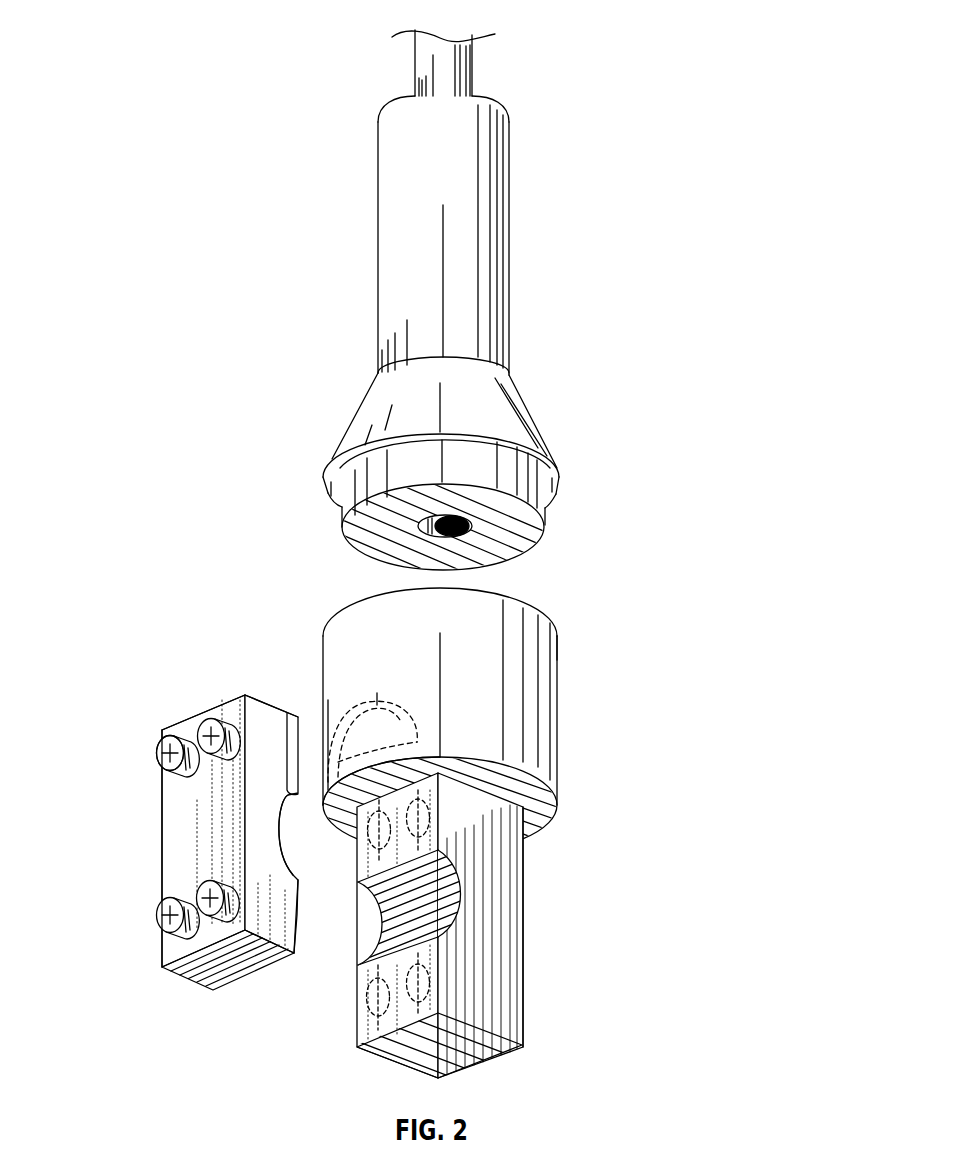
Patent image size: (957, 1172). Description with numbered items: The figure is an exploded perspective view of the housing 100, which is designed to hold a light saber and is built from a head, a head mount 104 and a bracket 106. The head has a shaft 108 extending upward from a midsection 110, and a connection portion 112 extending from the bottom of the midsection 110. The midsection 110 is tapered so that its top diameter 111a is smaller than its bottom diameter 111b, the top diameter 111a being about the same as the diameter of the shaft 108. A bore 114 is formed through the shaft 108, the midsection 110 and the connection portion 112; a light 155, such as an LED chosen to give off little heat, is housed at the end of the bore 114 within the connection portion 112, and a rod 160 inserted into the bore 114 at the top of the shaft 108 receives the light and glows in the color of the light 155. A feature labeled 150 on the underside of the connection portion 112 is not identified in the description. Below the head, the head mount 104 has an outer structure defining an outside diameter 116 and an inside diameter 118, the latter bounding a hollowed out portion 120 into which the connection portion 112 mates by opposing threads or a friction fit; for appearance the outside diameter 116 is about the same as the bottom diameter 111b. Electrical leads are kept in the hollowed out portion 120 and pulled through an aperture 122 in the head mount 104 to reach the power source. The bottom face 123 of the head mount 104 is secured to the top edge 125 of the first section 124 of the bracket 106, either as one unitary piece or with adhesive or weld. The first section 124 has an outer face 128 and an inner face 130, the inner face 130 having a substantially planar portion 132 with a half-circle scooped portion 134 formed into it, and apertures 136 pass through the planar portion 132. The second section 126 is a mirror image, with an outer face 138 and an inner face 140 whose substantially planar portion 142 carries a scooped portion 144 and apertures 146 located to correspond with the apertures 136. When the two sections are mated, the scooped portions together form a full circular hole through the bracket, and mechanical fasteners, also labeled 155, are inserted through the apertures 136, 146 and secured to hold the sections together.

The housing 100 is at (587, 93).
The head mount 104 is at (300, 664).
The bracket 106 is at (558, 930).
The shaft 108 is at (508, 218).
The midsection 110 is at (528, 412).
The top diameter 111a is at (508, 377).
The bottom diameter 111b is at (553, 452).
The connection portion 112 is at (532, 498).
The bore 114 is at (425, 528).
The outside diameter 116 is at (557, 703).
The inside diameter 118 is at (551, 618).
The hollowed out portion 120 is at (530, 596).
The aperture 122 is at (355, 738).
The bottom face 123 is at (543, 808).
The first section 124 is at (520, 903).
The top edge 125 is at (513, 806).
The second section 126 is at (192, 715).
The outer face 128 is at (523, 1000).
The inner face 130 is at (358, 851).
The substantially planar portion 132 is at (432, 1000).
The scooped portion 134 is at (378, 923).
The apertures 136 is at (427, 808).
The outer face 138 is at (165, 798).
The inner face 140 is at (296, 915).
The substantially planar portion 142 is at (298, 892).
The scooped portion 144 is at (273, 833).
The apertures 146 is at (168, 776).
The fiber aperture 150 is at (465, 525).
The light 155 is at (162, 738).
The rod 160 is at (463, 73).